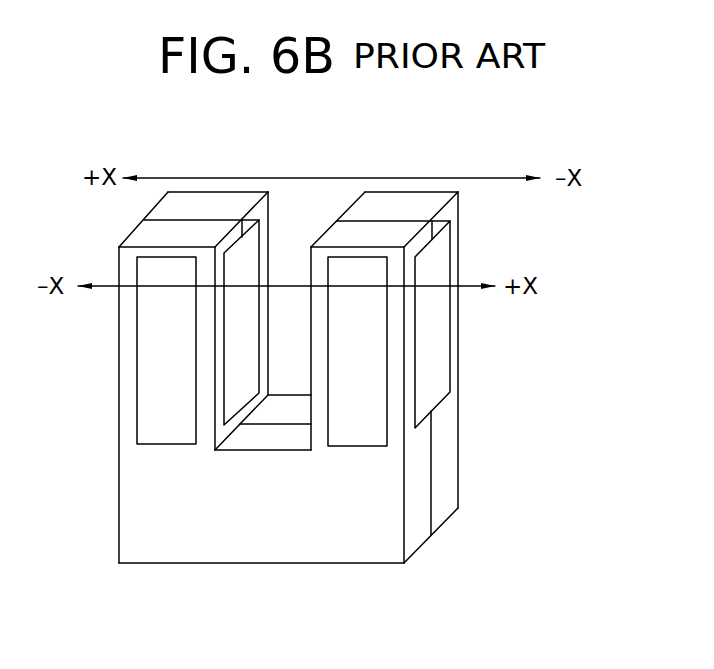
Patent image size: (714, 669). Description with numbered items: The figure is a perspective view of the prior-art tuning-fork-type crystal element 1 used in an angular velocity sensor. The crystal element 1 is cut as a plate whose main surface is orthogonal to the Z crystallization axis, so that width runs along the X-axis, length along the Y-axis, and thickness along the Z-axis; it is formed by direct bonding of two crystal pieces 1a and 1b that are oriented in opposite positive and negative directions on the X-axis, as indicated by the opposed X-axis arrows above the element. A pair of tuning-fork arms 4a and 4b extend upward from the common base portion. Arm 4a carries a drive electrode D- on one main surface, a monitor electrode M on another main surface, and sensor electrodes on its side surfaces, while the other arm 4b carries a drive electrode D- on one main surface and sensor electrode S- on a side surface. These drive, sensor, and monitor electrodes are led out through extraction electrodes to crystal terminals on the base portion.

The tuning-fork-type crystal element 1 is at (349, 377).
The crystal piece 1a is at (447, 475).
The crystal piece 1b is at (417, 508).
The tuning-fork arm 4a is at (191, 321).
The tuning-fork arm 4b is at (434, 401).
The monitor electrode M is at (158, 381).
The sensor electrode S- is at (438, 362).
The drive electrode D- is at (358, 430).